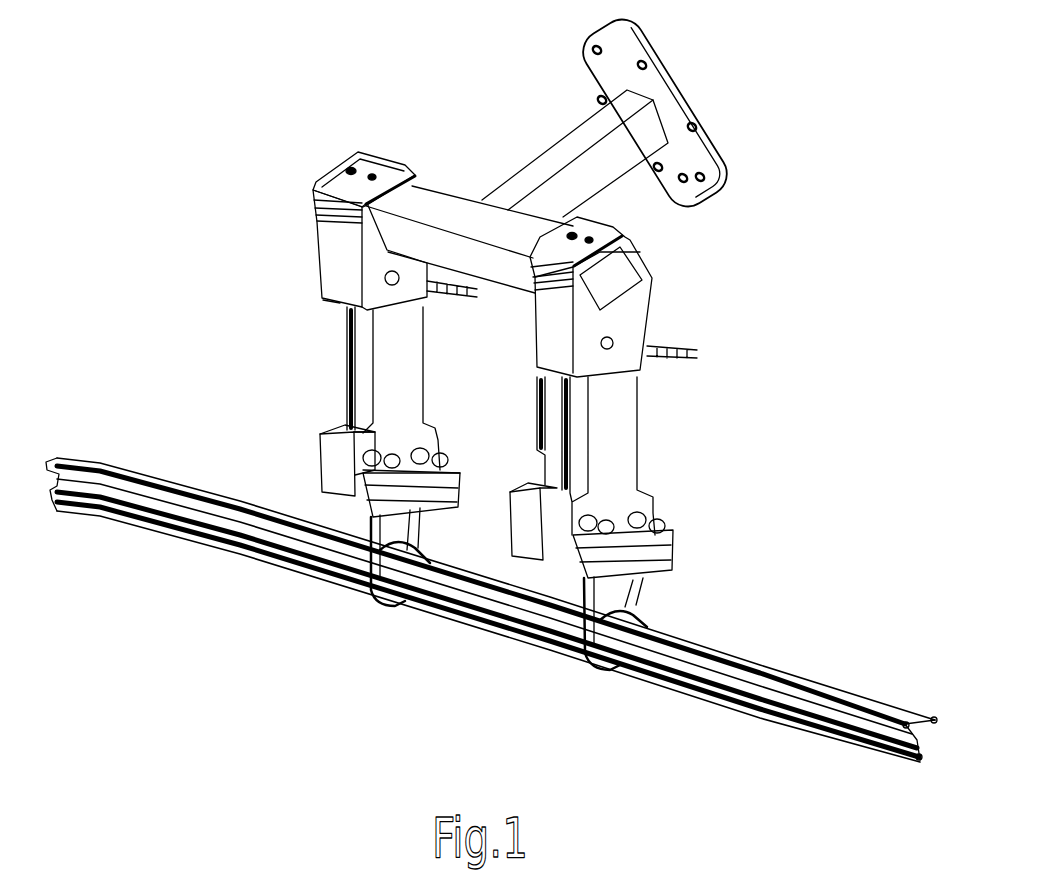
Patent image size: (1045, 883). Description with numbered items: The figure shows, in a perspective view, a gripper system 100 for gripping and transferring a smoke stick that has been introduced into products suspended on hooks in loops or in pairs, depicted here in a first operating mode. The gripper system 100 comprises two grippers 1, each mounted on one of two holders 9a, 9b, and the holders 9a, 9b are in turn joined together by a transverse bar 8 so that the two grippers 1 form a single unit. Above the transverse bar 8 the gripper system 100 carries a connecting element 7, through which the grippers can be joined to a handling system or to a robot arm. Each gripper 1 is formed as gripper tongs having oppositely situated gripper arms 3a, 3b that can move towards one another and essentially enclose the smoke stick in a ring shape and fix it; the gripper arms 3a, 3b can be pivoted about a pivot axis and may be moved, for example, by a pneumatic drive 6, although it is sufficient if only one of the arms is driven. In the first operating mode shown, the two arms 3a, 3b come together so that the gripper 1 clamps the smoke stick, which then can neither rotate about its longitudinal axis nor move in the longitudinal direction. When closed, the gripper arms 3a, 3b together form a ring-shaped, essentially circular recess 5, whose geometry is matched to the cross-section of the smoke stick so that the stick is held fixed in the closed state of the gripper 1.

The gripper system 100 is at (206, 392).
The gripper 1 is at (364, 615).
The gripper arm 3a is at (318, 567).
The gripper arm 3b is at (438, 530).
The circular recess 5 is at (387, 607).
The pneumatic drive 6 is at (353, 420).
The connecting element 7 is at (580, 50).
The transverse bar 8 is at (450, 203).
The holder 9a is at (347, 335).
The holder 9b is at (633, 420).